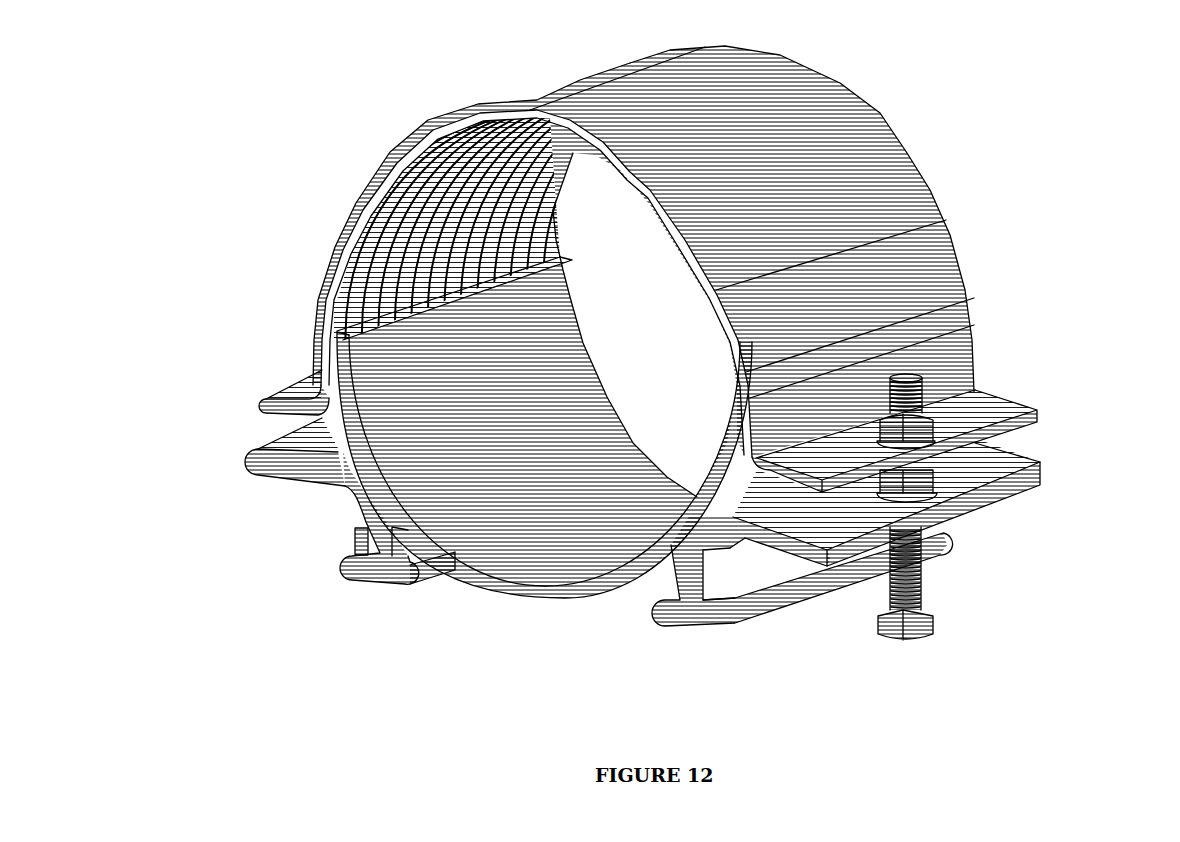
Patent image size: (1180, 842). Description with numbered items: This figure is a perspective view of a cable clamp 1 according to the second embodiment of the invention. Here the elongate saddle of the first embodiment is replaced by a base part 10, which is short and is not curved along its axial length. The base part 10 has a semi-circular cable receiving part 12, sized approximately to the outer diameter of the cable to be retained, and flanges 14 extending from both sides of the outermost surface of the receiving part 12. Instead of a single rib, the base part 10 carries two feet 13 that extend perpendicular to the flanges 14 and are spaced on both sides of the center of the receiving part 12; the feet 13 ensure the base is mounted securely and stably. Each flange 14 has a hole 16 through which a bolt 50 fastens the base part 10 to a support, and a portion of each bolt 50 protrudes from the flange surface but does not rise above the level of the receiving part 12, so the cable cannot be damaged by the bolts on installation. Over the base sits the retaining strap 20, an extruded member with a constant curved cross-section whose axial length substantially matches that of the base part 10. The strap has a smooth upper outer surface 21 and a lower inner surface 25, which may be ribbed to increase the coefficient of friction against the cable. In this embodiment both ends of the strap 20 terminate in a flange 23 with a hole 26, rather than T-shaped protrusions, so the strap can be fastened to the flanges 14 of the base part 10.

The cable clamp 1 is at (170, 182).
The base part 10 is at (372, 674).
The cable receiving part 12 is at (537, 593).
The feet 13 is at (365, 570).
The flange 14 is at (278, 465).
The hole 16 is at (935, 493).
The retaining strap 20 is at (956, 91).
The upper outer surface 21 is at (828, 168).
The flange 23 is at (300, 382).
The lower inner surface 25 is at (403, 255).
The hole 26 is at (933, 440).
The bolt 50 is at (920, 588).